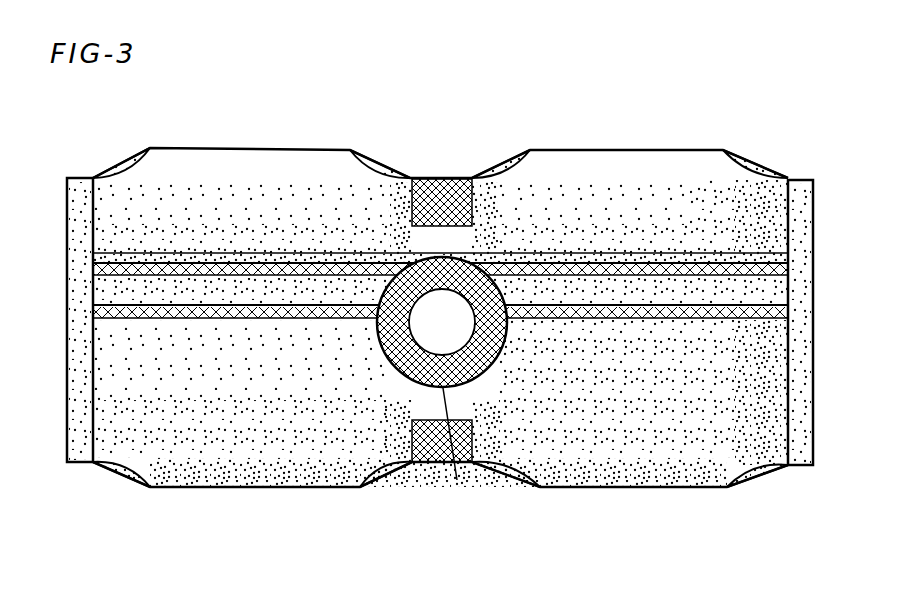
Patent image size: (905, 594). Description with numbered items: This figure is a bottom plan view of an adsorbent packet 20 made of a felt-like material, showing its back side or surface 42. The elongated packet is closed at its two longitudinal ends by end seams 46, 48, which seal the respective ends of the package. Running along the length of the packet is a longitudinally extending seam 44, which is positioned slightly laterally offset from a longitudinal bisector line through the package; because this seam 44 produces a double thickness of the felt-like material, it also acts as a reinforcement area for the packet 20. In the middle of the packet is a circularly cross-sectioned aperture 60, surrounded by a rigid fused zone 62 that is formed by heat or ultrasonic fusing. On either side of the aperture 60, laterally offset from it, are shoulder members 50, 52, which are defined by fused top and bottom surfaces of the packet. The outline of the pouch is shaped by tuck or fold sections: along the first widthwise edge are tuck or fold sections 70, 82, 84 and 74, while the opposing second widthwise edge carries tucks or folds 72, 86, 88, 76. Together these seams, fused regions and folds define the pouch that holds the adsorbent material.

The adsorbent packet 20 is at (818, 254).
The back side or surface 42 is at (623, 450).
The longitudinally extending seam 44 is at (103, 288).
The end seam 46 is at (75, 433).
The end seam 48 is at (798, 180).
The shoulder member 50 is at (437, 186).
The shoulder member 52 is at (428, 465).
The aperture 60 is at (459, 337).
The fused zone 62 is at (459, 453).
The tuck or fold section 70 is at (120, 166).
The tuck or fold 72 is at (123, 480).
The tuck or fold section 74 is at (751, 165).
The tuck or fold 76 is at (760, 480).
The tuck or fold section 82 is at (400, 166).
The tuck or fold section 84 is at (498, 156).
The tuck or fold 86 is at (382, 480).
The tuck or fold 88 is at (505, 488).